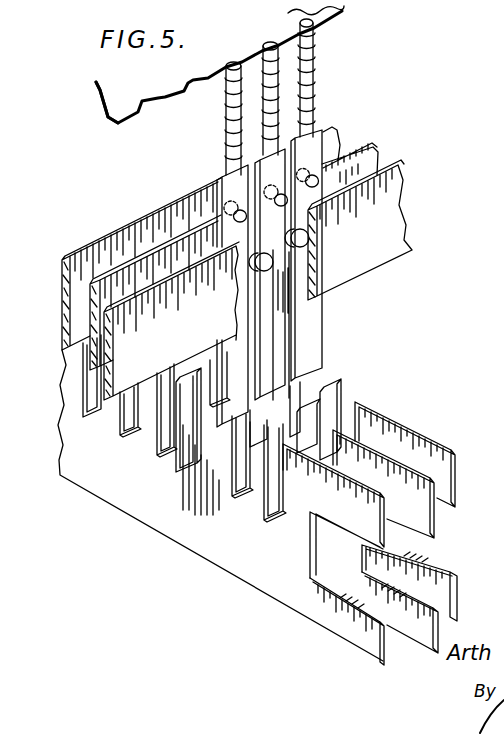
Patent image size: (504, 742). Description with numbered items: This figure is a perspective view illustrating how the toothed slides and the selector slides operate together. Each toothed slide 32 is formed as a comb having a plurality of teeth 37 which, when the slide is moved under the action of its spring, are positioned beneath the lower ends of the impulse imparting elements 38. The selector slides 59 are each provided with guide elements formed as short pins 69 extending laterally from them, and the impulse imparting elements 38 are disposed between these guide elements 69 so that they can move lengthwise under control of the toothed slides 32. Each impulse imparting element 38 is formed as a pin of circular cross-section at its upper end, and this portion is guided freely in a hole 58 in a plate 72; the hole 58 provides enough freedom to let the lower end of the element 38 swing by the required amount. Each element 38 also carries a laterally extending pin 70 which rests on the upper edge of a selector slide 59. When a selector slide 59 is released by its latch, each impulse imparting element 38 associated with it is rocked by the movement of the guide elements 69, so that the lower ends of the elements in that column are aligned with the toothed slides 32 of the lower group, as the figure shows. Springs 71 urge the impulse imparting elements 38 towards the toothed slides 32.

The toothed slide 32 is at (436, 575).
The teeth 37 is at (322, 396).
The impulse imparting element 38 is at (313, 99).
The hole 58 is at (210, 78).
The selector slide 59 is at (385, 173).
The guide element 69 is at (301, 243).
The laterally extending pin 70 is at (234, 203).
The spring 71 is at (226, 100).
The plate 72 is at (110, 100).